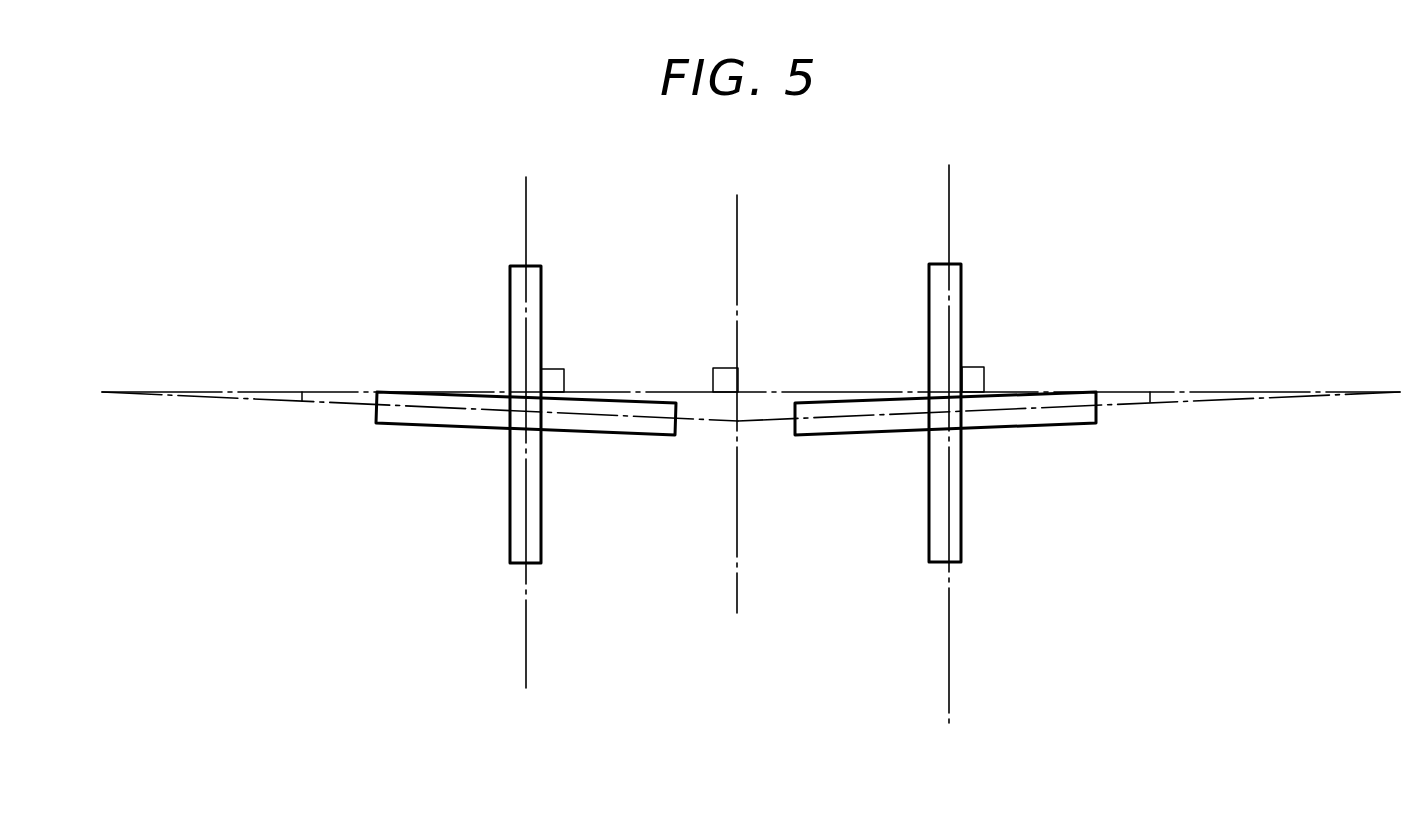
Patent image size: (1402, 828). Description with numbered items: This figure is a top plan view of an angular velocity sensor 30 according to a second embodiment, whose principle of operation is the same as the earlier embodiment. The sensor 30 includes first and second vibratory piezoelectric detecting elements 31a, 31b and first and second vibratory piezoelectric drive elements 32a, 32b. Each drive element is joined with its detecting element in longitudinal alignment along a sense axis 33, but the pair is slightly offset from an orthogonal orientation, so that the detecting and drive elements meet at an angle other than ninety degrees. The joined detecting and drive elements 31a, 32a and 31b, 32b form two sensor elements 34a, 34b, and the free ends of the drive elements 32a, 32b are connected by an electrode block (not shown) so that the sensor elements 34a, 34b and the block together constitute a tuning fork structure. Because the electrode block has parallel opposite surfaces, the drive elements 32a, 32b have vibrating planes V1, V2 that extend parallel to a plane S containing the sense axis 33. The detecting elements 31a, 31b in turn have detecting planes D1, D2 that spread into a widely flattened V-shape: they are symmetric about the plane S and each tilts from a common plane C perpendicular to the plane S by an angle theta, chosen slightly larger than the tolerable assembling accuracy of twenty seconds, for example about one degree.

The angular velocity sensor 30 is at (871, 257).
The first vibratory piezoelectric detecting element 31a is at (1078, 392).
The second vibratory piezoelectric detecting element 31b is at (416, 392).
The first vibratory piezoelectric drive element 32a is at (962, 278).
The second vibratory piezoelectric drive element 32b is at (518, 295).
The sense axis 33 is at (739, 391).
The first sensor element 34a is at (1042, 238).
The second sensor element 34b is at (434, 226).
The plane containing the sense axis S is at (740, 220).
The horizontal reference line C is at (683, 390).
The vibrating plane of the first drive element V1 is at (949, 681).
The vibrating plane of the second drive element V2 is at (526, 664).
The detecting plane of the first detecting element D1 is at (1027, 425).
The detecting plane of the second detecting element D2 is at (441, 426).